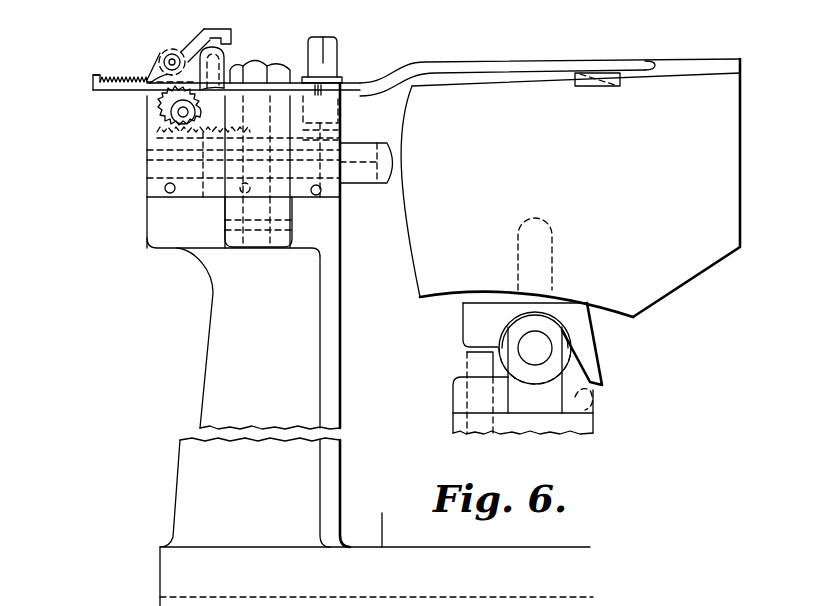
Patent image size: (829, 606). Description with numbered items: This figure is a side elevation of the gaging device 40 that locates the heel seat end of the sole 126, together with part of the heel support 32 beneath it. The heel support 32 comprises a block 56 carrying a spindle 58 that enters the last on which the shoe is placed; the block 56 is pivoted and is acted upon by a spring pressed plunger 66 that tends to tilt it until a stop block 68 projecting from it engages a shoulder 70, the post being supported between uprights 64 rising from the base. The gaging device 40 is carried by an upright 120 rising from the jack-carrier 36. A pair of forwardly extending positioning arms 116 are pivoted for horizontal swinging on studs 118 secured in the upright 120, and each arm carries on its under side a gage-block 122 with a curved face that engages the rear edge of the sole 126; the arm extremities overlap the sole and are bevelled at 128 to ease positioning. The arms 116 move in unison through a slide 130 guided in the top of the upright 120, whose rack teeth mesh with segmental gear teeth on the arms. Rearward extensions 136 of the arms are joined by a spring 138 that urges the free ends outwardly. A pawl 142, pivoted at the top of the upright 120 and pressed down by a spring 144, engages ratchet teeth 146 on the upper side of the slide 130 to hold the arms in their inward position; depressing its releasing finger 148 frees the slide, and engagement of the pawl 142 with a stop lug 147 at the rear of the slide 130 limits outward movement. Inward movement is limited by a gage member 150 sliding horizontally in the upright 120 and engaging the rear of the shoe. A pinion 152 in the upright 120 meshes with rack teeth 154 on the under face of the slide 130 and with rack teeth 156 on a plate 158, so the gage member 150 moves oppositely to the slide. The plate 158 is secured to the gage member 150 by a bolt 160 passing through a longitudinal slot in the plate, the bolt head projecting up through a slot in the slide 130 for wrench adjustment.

The heel support 32 is at (520, 433).
The jack-carrier 36 is at (376, 522).
The gaging device 40 is at (500, 53).
The block 56 is at (470, 322).
The spindle 58 is at (543, 240).
The uprights 64 is at (567, 427).
The spring pressed plunger 66 is at (473, 363).
The stop block 68 is at (593, 363).
The shoulder 70 is at (592, 408).
The positioning arms 116 is at (540, 68).
The studs 118 is at (243, 255).
The upright 120 is at (214, 372).
The gage-blocks 122 is at (590, 86).
The sole 126 is at (733, 62).
The bevelled extremities 128 is at (643, 68).
The slide 130 is at (117, 88).
The rearward extensions 136 is at (250, 96).
The spring 138 is at (213, 75).
The pawl 142 is at (149, 72).
The spring 144 is at (154, 60).
The ratchet teeth 146 is at (117, 75).
The stop lug 147 is at (93, 78).
The releasing finger 148 is at (221, 29).
The gage member 150 is at (363, 175).
The pinion 152 is at (167, 112).
The rack teeth 154 is at (140, 97).
The rack teeth 156 is at (160, 148).
The plate 158 is at (210, 140).
The bolt 160 is at (328, 70).